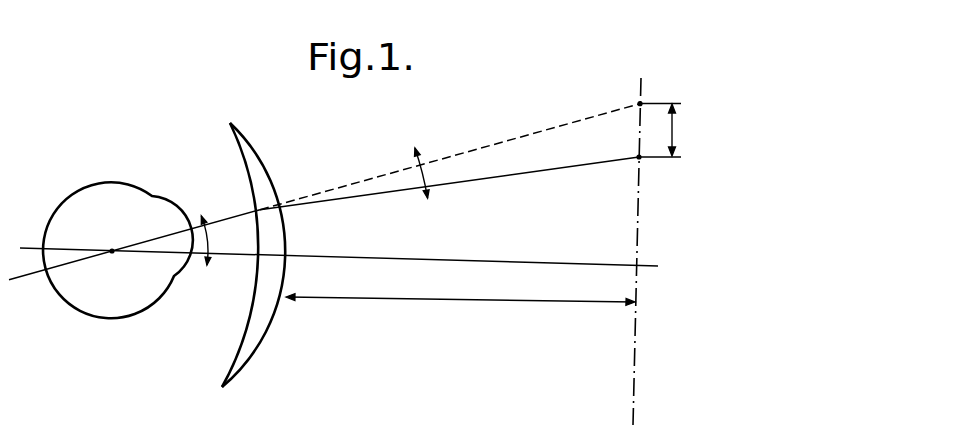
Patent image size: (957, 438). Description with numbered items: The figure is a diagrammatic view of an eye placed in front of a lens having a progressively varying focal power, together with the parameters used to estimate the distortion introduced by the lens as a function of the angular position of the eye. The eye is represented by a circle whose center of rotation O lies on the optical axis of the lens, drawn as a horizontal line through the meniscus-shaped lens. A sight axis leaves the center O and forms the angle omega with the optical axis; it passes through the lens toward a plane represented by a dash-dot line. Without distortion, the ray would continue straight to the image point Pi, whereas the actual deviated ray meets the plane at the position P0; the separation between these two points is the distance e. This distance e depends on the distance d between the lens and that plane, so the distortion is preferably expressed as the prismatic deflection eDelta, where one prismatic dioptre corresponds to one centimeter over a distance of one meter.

The eye center of rotation O is at (118, 250).
The angle omega x,y omega is at (214, 264).
The prismatic deflection e delta x,y eDelta is at (424, 173).
The distorted image point P i Pi is at (642, 101).
The undistorted position P 0 P0 is at (641, 159).
The distortion distance e x,y e is at (697, 130).
The distance d is at (460, 290).